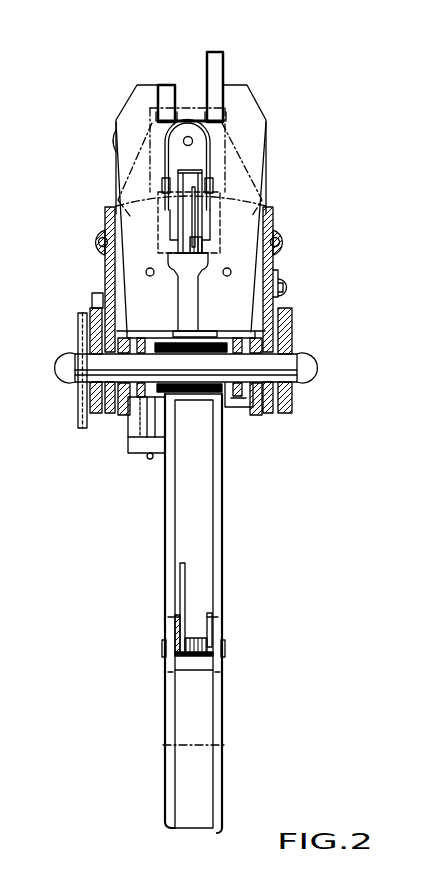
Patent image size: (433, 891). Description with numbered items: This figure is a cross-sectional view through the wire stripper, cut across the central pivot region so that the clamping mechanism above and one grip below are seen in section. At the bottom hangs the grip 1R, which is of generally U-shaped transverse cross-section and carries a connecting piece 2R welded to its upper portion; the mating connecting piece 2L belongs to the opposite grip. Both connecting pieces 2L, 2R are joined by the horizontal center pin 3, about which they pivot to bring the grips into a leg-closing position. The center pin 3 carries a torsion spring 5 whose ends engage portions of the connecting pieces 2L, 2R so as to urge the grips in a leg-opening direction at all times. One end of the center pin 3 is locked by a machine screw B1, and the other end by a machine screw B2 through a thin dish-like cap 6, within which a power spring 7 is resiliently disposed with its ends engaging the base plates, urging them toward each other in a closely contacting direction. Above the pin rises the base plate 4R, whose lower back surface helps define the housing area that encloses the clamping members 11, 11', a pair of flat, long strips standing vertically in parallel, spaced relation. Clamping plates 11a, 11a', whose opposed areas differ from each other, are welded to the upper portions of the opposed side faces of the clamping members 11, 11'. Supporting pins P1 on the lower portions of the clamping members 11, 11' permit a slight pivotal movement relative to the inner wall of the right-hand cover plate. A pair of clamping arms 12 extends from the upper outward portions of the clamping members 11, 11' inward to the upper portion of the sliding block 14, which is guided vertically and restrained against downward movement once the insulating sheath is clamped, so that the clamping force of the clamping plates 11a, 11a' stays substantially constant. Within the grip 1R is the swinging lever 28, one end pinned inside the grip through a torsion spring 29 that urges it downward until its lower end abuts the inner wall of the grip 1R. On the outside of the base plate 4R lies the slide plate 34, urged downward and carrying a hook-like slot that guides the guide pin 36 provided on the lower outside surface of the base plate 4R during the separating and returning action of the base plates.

The grip 1R is at (217, 565).
The connecting piece 2L is at (118, 417).
The connecting piece 2R is at (140, 455).
The center pin 3 is at (87, 368).
The base plate 4R is at (298, 172).
The torsion spring 5 is at (215, 395).
The cap 6 is at (78, 317).
The power spring 7 is at (80, 428).
The clamping member 11 is at (264, 249).
The clamping member 11' is at (112, 249).
The clamping plate 11a is at (237, 69).
The clamping plate 11a' is at (140, 81).
The clamping arm 12 is at (163, 120).
The sliding block 14 is at (188, 138).
The swinging lever 28 is at (212, 628).
The torsion spring 29 is at (212, 643).
The slide plate 34 is at (279, 275).
The guide pin 36 is at (287, 288).
The supporting pin P1 is at (308, 258).
The machine screw B1 is at (307, 360).
The machine screw B2 is at (65, 373).